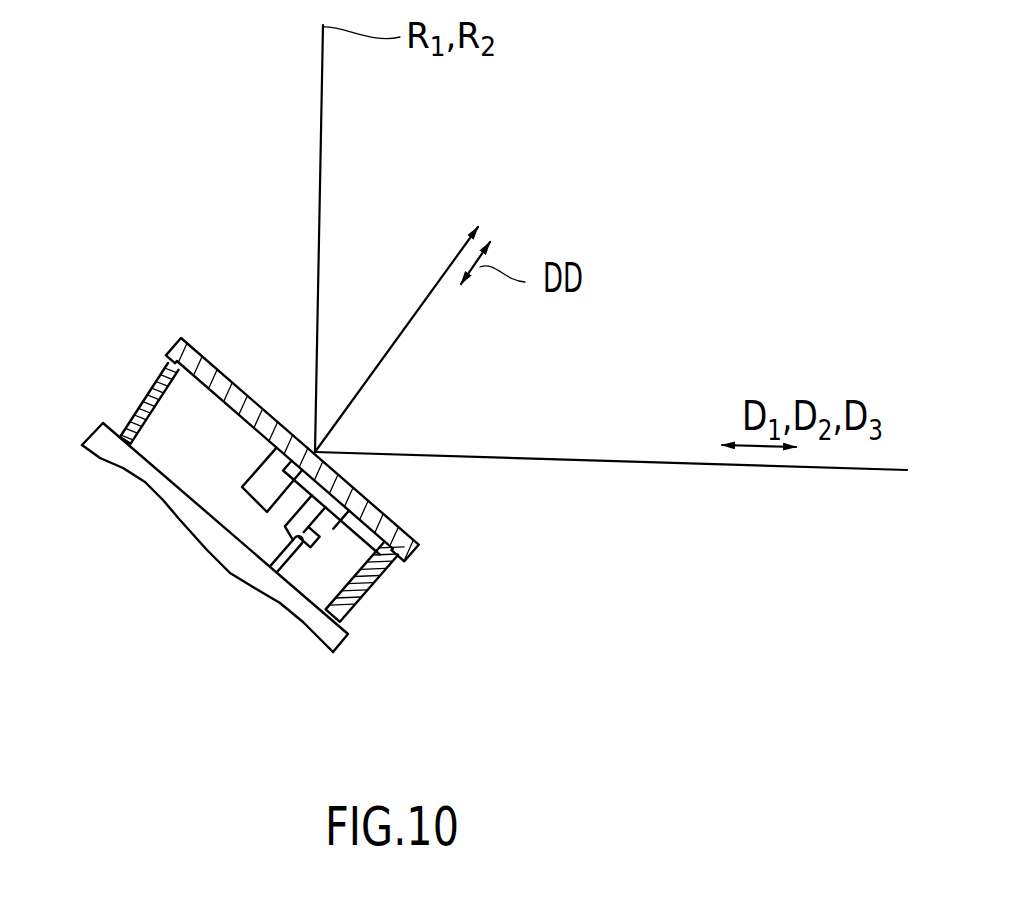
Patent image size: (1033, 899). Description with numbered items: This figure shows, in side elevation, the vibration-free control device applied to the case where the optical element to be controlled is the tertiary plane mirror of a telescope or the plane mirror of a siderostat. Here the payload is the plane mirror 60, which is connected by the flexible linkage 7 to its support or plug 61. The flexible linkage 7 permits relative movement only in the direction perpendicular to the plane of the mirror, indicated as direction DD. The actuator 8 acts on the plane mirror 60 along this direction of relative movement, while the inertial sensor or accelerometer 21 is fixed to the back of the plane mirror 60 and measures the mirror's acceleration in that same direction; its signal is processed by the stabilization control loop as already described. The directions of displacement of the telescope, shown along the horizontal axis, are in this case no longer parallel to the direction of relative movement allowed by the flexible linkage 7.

The flexible linkage 7 is at (150, 386).
The actuator 8 is at (320, 505).
The inertial sensor or accelerometer 21 is at (281, 476).
The plane mirror 60 is at (225, 374).
The support or plug 61 is at (350, 640).